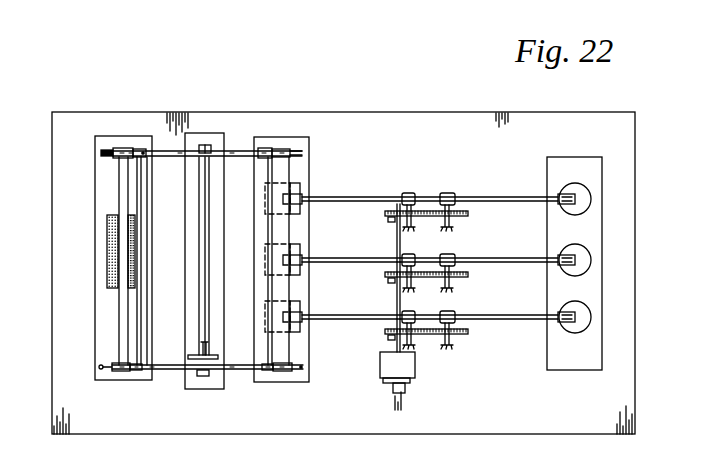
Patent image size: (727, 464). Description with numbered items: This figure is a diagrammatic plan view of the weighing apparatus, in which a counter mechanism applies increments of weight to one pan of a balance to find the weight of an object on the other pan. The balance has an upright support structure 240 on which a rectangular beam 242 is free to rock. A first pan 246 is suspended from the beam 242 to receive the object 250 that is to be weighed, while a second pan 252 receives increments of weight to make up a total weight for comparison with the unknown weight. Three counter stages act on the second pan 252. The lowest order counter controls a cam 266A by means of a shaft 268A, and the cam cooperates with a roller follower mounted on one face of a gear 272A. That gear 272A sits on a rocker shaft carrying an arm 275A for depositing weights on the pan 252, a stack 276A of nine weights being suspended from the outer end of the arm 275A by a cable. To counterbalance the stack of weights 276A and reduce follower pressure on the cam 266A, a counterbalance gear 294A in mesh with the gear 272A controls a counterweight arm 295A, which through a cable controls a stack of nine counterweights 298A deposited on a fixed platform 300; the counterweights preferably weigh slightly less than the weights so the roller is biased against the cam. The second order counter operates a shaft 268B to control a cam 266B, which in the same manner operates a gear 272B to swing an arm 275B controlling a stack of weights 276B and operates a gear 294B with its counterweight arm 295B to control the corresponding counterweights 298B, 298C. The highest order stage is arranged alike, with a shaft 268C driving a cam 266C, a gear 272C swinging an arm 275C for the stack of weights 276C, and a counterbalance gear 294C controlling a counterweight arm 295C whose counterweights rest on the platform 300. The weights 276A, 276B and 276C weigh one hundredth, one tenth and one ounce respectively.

The upright support structure 240 is at (200, 387).
The rectangular beam 242 is at (168, 373).
The first pan 246 is at (107, 377).
The object 250 is at (108, 245).
The second pan 252 is at (277, 377).
The cam 266A is at (388, 336).
The cam 266B is at (388, 281).
The cam 266C is at (388, 221).
The shaft 268A is at (396, 343).
The shaft 268B is at (398, 285).
The shaft 268C is at (398, 226).
The gear 272A is at (417, 340).
The gear 272B is at (416, 277).
The gear 272C is at (417, 216).
The arm 275A is at (310, 317).
The arm 275B is at (310, 260).
The arm 275C is at (310, 199).
The stack of nine weights 276A is at (273, 318).
The stack of weights 276B is at (267, 250).
The stack of weights 276C is at (300, 208).
The counterbalance gear 294A is at (455, 333).
The counterbalance gear 294B is at (470, 275).
The counterbalance gear 294C is at (470, 214).
The counterweight arm 295A is at (484, 317).
The counterweight arm 295B is at (487, 260).
The counterweight arm 295C is at (487, 199).
The stack of nine counterweights 298A is at (585, 313).
The counterweights 298B is at (585, 254).
The counterweights 298C is at (585, 193).
The fixed platform 300 is at (567, 362).